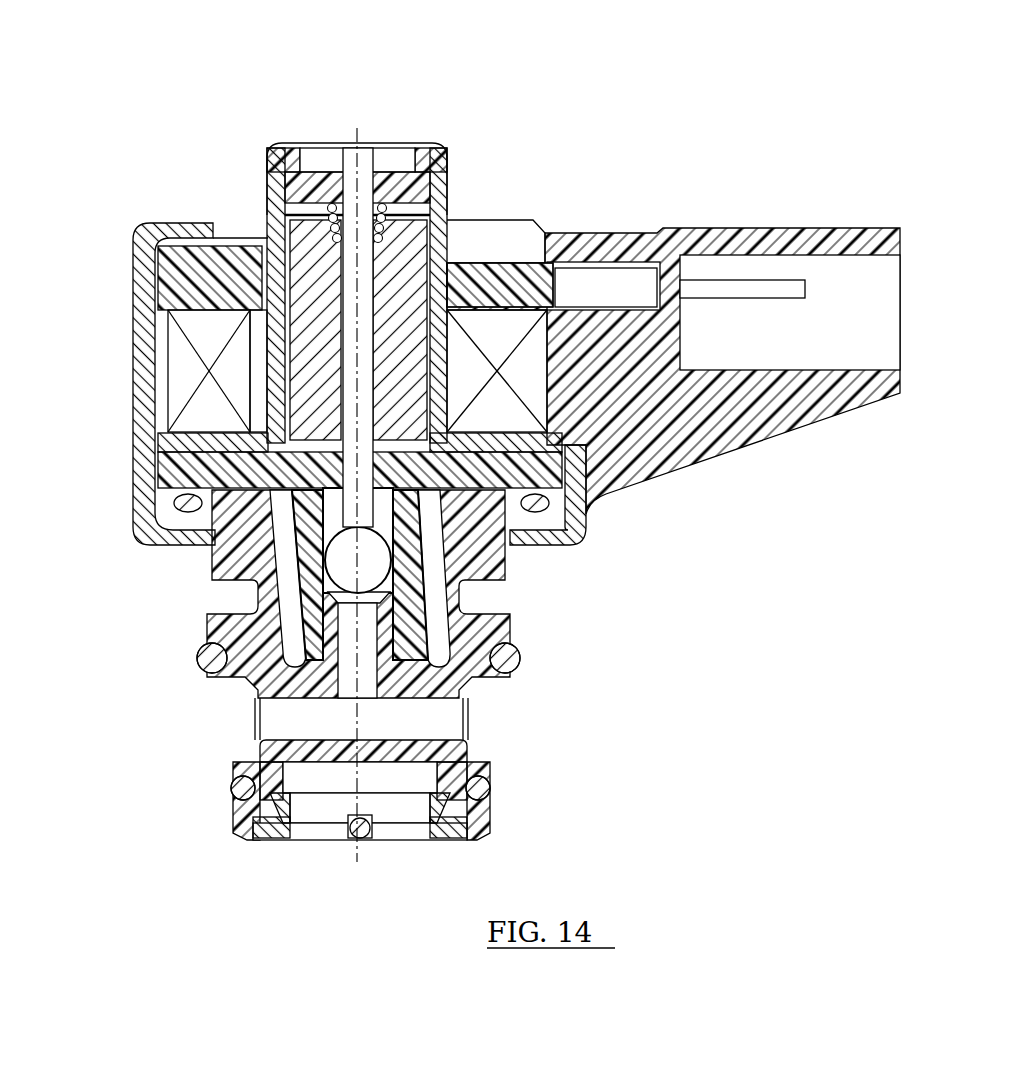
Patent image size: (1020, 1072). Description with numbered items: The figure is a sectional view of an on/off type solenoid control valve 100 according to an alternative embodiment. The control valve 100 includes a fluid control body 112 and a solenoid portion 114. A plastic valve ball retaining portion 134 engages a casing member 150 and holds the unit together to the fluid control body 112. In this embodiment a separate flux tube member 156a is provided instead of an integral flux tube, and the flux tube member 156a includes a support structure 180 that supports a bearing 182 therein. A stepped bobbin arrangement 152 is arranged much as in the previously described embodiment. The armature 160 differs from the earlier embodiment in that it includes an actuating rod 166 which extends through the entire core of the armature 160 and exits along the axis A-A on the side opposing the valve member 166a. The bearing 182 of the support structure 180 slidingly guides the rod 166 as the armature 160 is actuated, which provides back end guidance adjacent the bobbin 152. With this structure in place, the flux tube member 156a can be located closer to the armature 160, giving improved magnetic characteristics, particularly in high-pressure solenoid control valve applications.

The solenoid control valve 100 is at (276, 80).
The fluid control body 112 is at (517, 568).
The solenoid portion 114 is at (330, 408).
The valve ball retaining portion 134 is at (320, 537).
The casing member 150 is at (142, 332).
The stepped bobbin arrangement 152 is at (195, 283).
The flux tube member 156a is at (339, 160).
The armature 160 is at (403, 260).
The actuating rod 166 is at (366, 163).
The valve member 166a is at (378, 566).
The support structure 180 is at (277, 212).
The bearing 182 is at (428, 188).